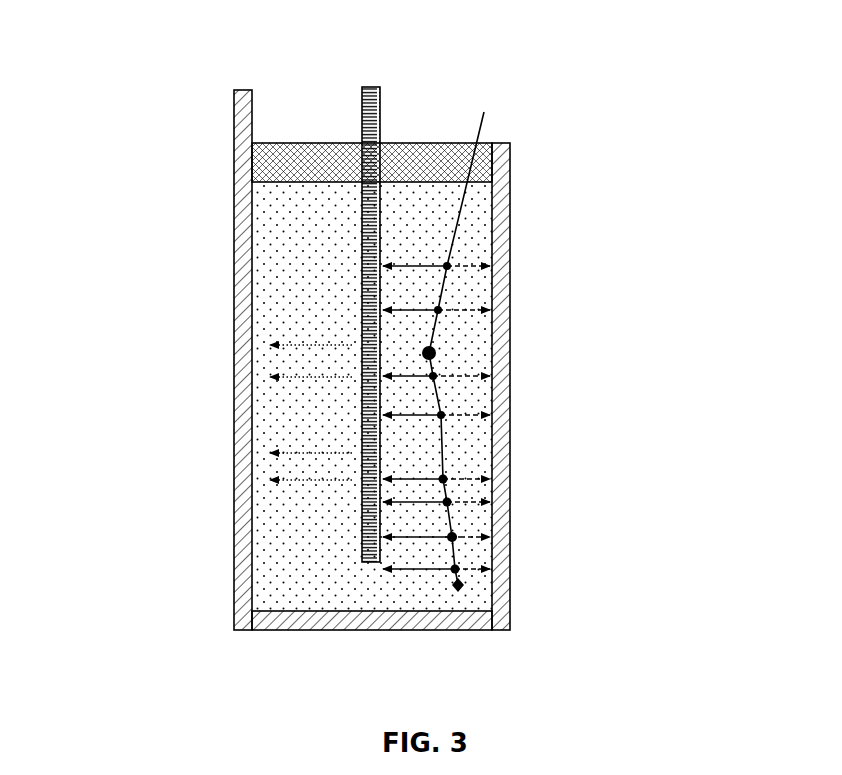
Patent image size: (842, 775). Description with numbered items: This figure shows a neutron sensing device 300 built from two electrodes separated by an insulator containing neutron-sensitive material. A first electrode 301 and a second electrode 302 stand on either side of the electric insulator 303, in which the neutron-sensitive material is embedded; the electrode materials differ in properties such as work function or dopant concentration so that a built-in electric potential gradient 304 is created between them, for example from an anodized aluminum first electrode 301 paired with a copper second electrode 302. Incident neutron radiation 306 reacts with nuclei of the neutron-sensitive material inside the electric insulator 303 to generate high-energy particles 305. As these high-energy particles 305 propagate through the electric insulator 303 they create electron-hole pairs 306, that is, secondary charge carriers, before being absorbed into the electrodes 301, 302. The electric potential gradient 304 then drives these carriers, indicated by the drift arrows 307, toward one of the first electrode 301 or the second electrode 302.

The neutron sensing device 300 is at (124, 150).
The first electrode 301 is at (376, 309).
The second electrode 302 is at (356, 341).
The electric insulator 303 is at (306, 605).
The electric potential gradient 304 is at (302, 442).
The high-energy particles 305 is at (470, 344).
The incident neutron radiation 306 is at (424, 350).
The diffusion arrows 307 is at (436, 418).